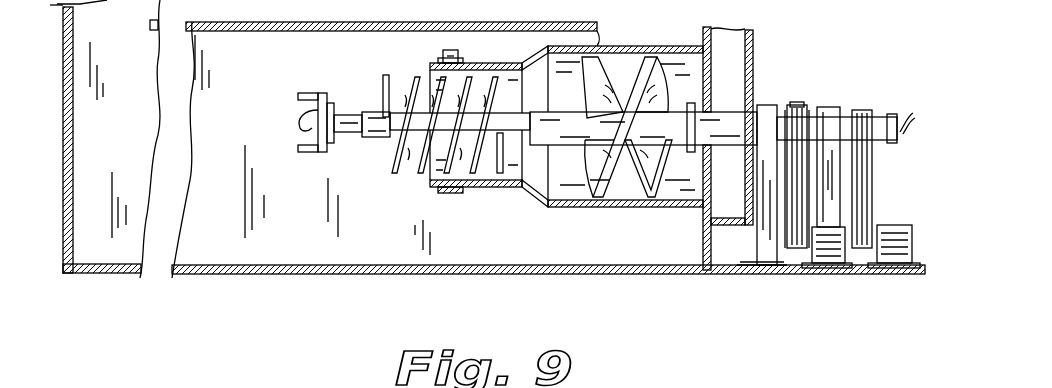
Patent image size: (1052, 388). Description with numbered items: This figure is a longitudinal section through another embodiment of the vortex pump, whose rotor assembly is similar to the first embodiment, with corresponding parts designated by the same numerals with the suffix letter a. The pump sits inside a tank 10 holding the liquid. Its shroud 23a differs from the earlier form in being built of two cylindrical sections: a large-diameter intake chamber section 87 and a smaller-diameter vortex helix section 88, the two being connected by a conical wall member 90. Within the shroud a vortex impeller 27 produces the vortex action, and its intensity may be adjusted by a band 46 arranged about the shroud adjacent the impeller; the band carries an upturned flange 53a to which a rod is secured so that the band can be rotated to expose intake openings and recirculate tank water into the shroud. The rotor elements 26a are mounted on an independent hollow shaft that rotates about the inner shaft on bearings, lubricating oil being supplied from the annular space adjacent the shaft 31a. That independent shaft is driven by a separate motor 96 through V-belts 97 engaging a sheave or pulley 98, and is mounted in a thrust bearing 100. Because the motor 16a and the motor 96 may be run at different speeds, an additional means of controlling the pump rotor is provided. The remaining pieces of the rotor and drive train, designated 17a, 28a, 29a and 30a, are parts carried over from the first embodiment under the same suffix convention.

The tank 10 is at (593, 93).
The motor 16a is at (898, 264).
The pulley 17a is at (868, 200).
The shroud 23a is at (610, 207).
The rotor elements 26a is at (660, 18).
The vortex impeller 27 is at (411, 77).
The pulley 28a is at (826, 109).
The U-shaped bracket 29a is at (316, 153).
The flange 30a is at (333, 143).
The shaft 31a is at (349, 113).
The band 46 is at (446, 193).
The upturned flange 53a is at (458, 56).
The intake chamber section 87 is at (683, 208).
The vortex helix section 88 is at (492, 188).
The conical wall member 90 is at (534, 201).
The motor 96 is at (830, 249).
The V-belts 97 is at (795, 213).
The sheave or pulley 98 is at (798, 107).
The thrust bearing 100 is at (767, 110).